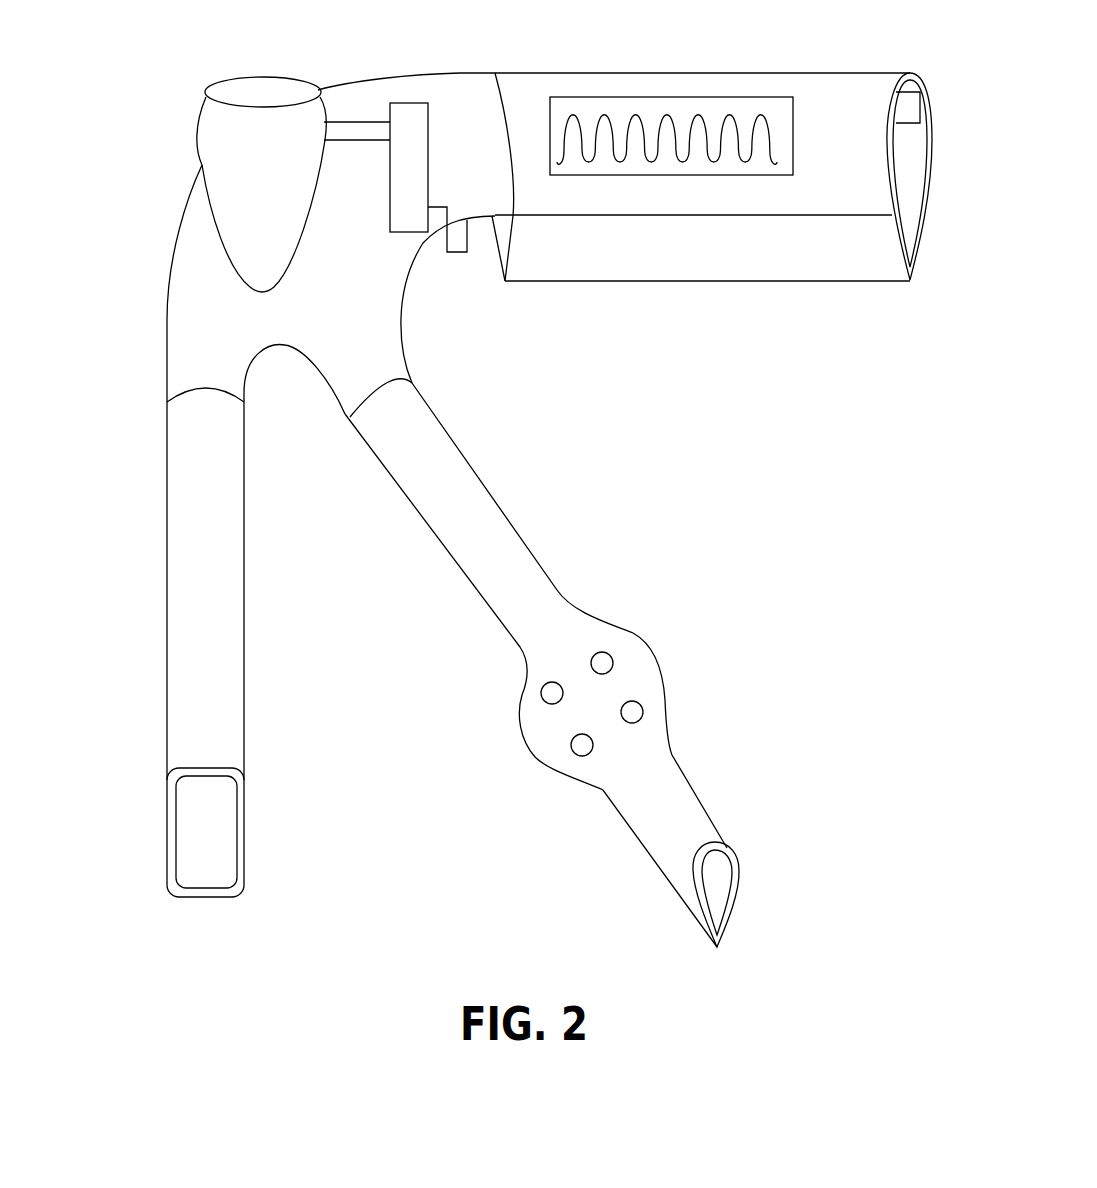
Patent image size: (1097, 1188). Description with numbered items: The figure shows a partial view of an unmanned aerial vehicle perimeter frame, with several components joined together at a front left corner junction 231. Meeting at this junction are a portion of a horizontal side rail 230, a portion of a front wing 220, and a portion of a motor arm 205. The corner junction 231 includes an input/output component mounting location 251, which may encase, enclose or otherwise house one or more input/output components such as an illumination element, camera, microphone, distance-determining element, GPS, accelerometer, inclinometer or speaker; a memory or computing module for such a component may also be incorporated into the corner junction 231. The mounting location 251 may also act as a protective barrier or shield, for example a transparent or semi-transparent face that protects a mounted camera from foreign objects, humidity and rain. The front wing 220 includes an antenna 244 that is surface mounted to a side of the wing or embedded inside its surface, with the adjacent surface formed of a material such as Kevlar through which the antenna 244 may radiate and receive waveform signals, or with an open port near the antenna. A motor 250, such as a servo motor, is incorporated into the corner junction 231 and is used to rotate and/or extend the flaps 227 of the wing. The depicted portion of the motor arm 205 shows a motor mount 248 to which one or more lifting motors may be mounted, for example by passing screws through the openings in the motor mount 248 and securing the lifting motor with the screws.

The motor arm 205 is at (515, 568).
The front wing 220 is at (853, 105).
The flaps 227 is at (735, 258).
The horizontal side rail 230 is at (178, 536).
The front left corner junction 231 is at (187, 262).
The antenna 244 is at (743, 105).
The motor mount 248 is at (653, 698).
The motor 250 is at (413, 215).
The input/output component mounting location 251 is at (227, 125).